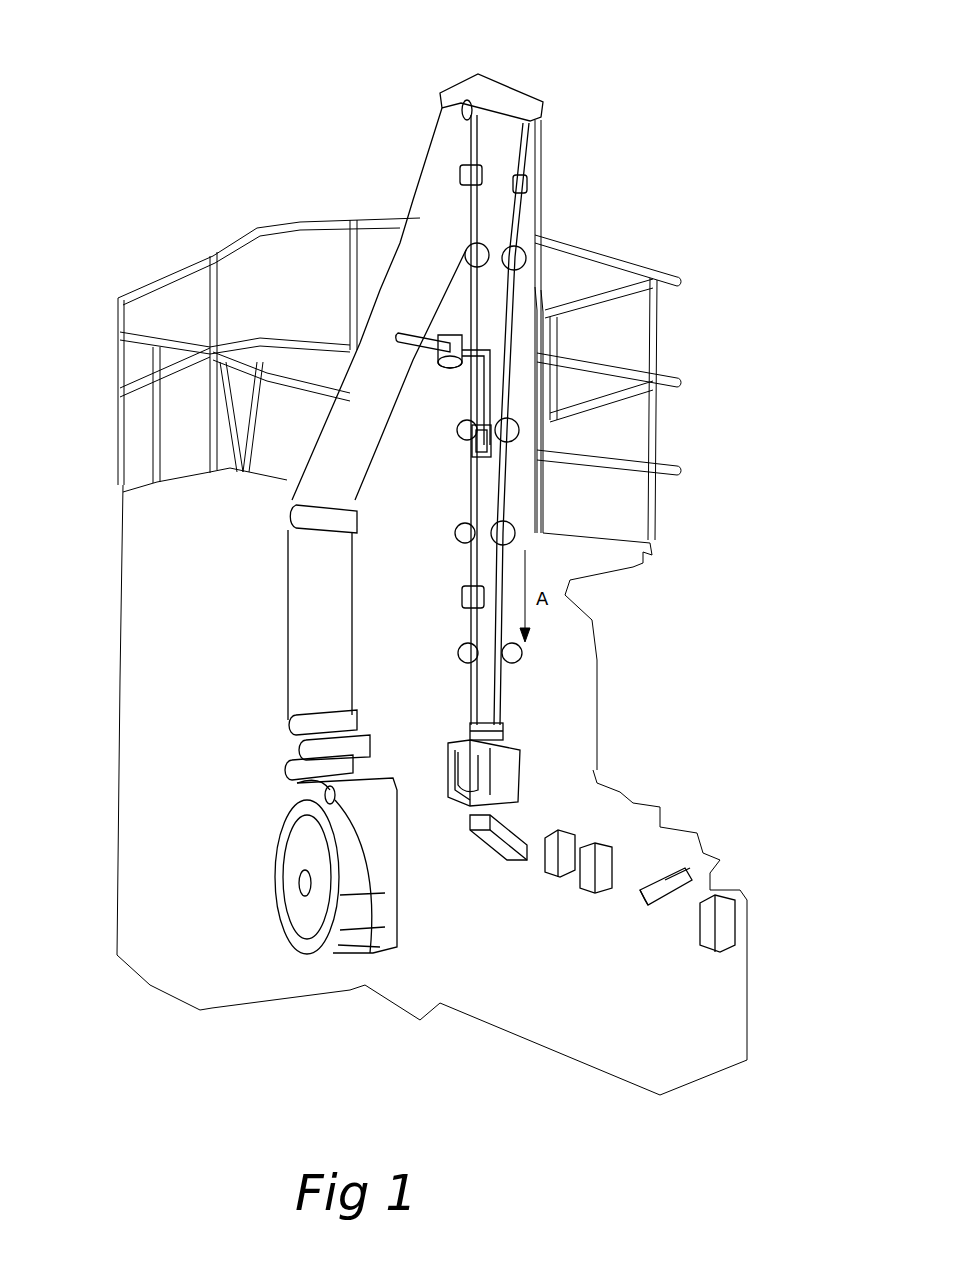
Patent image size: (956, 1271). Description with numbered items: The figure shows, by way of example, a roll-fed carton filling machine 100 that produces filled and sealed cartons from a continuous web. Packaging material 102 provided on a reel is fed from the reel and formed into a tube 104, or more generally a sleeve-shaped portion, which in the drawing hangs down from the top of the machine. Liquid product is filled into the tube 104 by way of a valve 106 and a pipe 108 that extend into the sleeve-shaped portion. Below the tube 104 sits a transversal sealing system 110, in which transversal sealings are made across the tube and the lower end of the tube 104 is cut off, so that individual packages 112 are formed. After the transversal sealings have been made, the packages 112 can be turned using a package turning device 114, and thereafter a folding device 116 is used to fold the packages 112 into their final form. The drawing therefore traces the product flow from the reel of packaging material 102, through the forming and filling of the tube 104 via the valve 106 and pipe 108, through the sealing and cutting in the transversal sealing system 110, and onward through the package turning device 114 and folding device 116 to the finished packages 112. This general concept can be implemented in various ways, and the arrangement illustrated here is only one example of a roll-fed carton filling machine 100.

The roll-fed carton filling machine 100 is at (703, 81).
The packaging material 102 is at (300, 637).
The tube 104 is at (487, 706).
The valve 106 is at (445, 340).
The pipe 108 is at (483, 403).
The transversal sealing system 110 is at (505, 775).
The packages 112 is at (500, 838).
The package turning device 114 is at (498, 868).
The folding device 116 is at (698, 972).